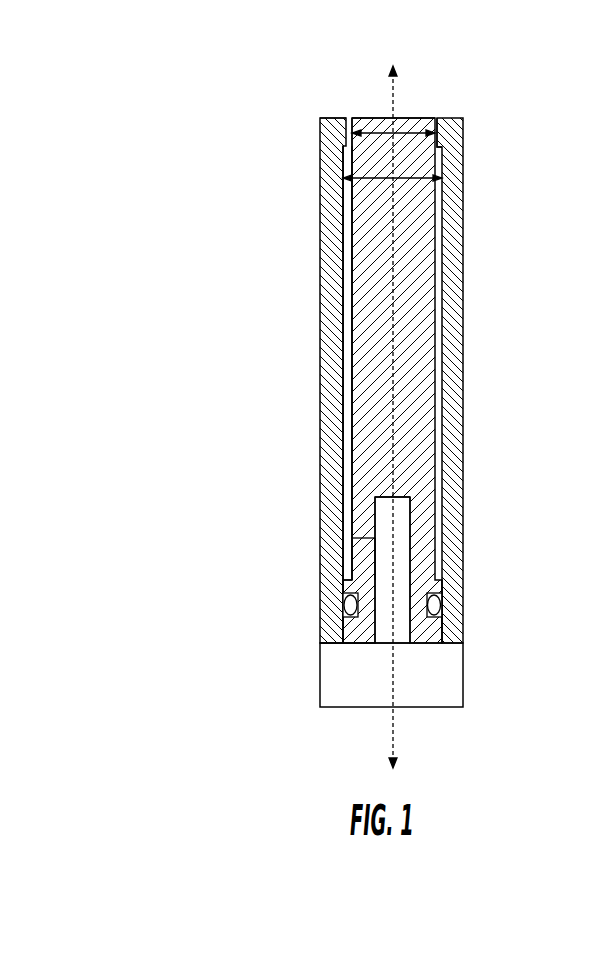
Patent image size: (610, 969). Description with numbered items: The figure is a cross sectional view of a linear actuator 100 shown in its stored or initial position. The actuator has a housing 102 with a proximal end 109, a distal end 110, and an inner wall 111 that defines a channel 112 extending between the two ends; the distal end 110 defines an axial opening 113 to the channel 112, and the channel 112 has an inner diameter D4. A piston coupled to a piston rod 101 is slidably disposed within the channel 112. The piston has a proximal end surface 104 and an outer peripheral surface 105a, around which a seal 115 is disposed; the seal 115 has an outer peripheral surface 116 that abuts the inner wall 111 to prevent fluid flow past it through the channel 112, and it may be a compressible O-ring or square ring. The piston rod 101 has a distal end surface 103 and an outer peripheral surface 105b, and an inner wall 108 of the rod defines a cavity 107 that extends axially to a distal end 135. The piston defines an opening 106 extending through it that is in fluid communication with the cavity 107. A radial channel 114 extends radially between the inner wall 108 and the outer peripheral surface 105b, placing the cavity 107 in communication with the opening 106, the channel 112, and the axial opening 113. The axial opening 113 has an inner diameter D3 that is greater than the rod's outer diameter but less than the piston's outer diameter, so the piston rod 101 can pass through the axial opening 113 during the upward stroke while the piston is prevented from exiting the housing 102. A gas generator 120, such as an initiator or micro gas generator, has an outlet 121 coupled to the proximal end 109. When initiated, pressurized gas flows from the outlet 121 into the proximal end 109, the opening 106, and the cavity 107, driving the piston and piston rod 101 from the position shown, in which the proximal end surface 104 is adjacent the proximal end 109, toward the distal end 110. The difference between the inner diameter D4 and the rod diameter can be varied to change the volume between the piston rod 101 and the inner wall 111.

The linear actuator 100 is at (190, 156).
The piston rod 101 is at (373, 298).
The housing 102 is at (320, 240).
The distal end surface of the piston rod 103 is at (372, 118).
The distal end of the housing 110 is at (320, 118).
The axial opening 113 is at (437, 120).
The outer peripheral surface of the piston rod 105b is at (352, 355).
The channel 112 is at (348, 402).
The inner wall of the housing 111 is at (343, 445).
The distal end of the cavity 135 is at (373, 502).
The radial channel 114 is at (360, 540).
The inner wall of the piston rod 108 is at (370, 562).
The cavity 107 is at (347, 582).
The seal 115 is at (345, 603).
The outer peripheral surface of the seal 116 is at (440, 600).
The outer peripheral surface of the piston 105a is at (447, 617).
The proximal end of the housing 109 is at (321, 640).
The proximal end surface of the piston 104 is at (362, 643).
The opening 106 is at (388, 643).
The gas generator 120 is at (455, 683).
The outlet 121 is at (398, 643).
The inner diameter of the axial opening D3 is at (415, 131).
The inner diameter of the channel D4 is at (415, 178).